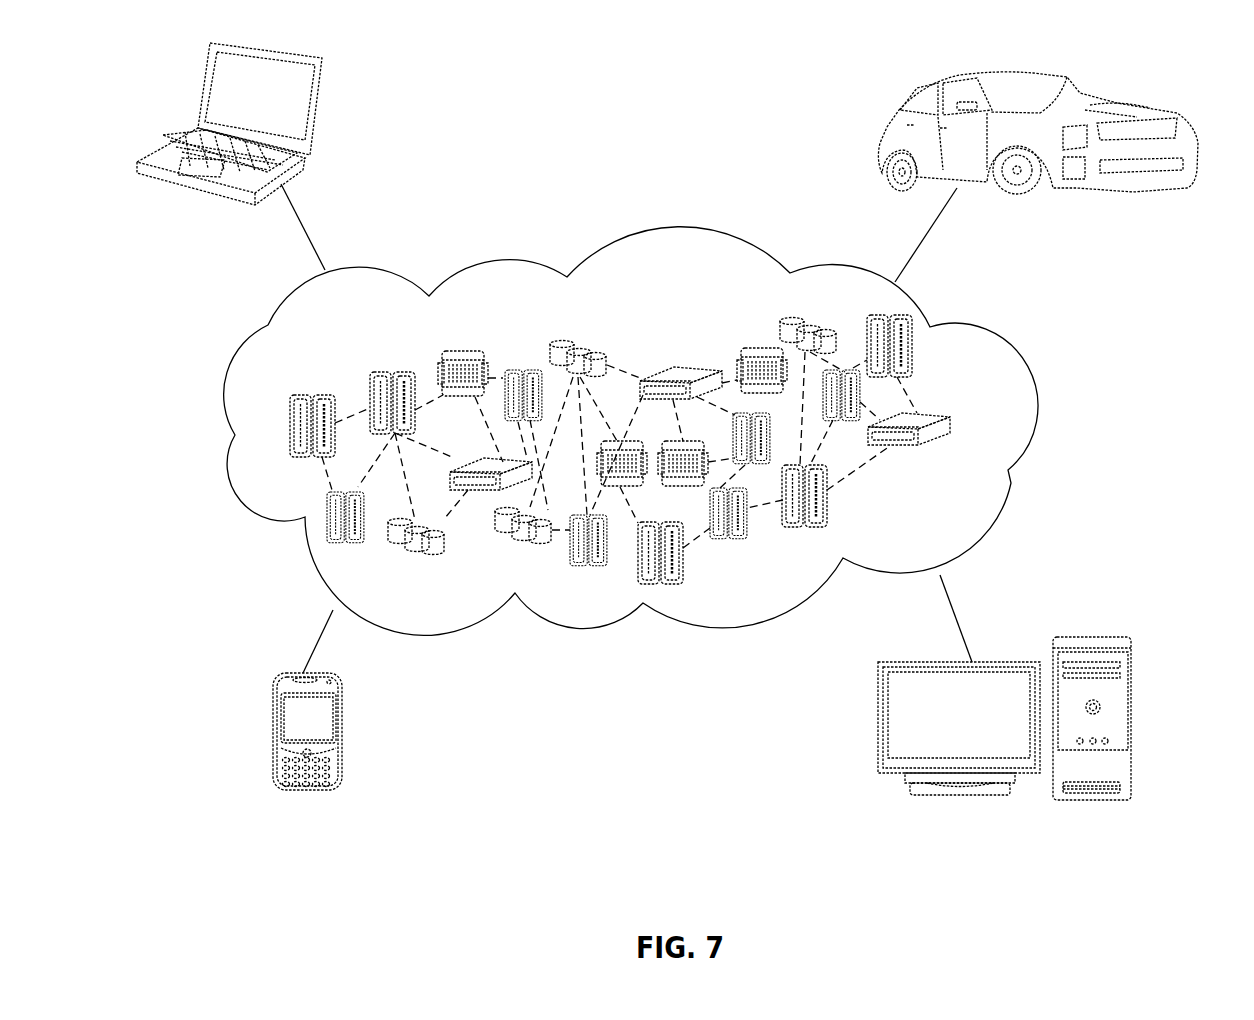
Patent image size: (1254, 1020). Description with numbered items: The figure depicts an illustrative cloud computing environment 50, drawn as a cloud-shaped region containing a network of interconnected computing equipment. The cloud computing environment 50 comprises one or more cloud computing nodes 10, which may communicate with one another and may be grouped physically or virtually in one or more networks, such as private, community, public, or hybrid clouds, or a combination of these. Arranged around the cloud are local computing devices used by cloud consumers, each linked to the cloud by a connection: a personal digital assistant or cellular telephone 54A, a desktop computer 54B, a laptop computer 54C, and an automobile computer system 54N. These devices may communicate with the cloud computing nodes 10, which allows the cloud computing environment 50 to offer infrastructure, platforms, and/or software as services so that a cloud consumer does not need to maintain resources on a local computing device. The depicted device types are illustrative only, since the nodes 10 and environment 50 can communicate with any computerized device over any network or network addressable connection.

The cloud computing nodes 10 is at (1037, 427).
The cloud computing environment 50 is at (1013, 340).
The personal digital assistant or cellular telephone 54A is at (270, 735).
The desktop computer 54B is at (1095, 633).
The laptop computer 54C is at (313, 112).
The automobile computer system 54N is at (888, 122).